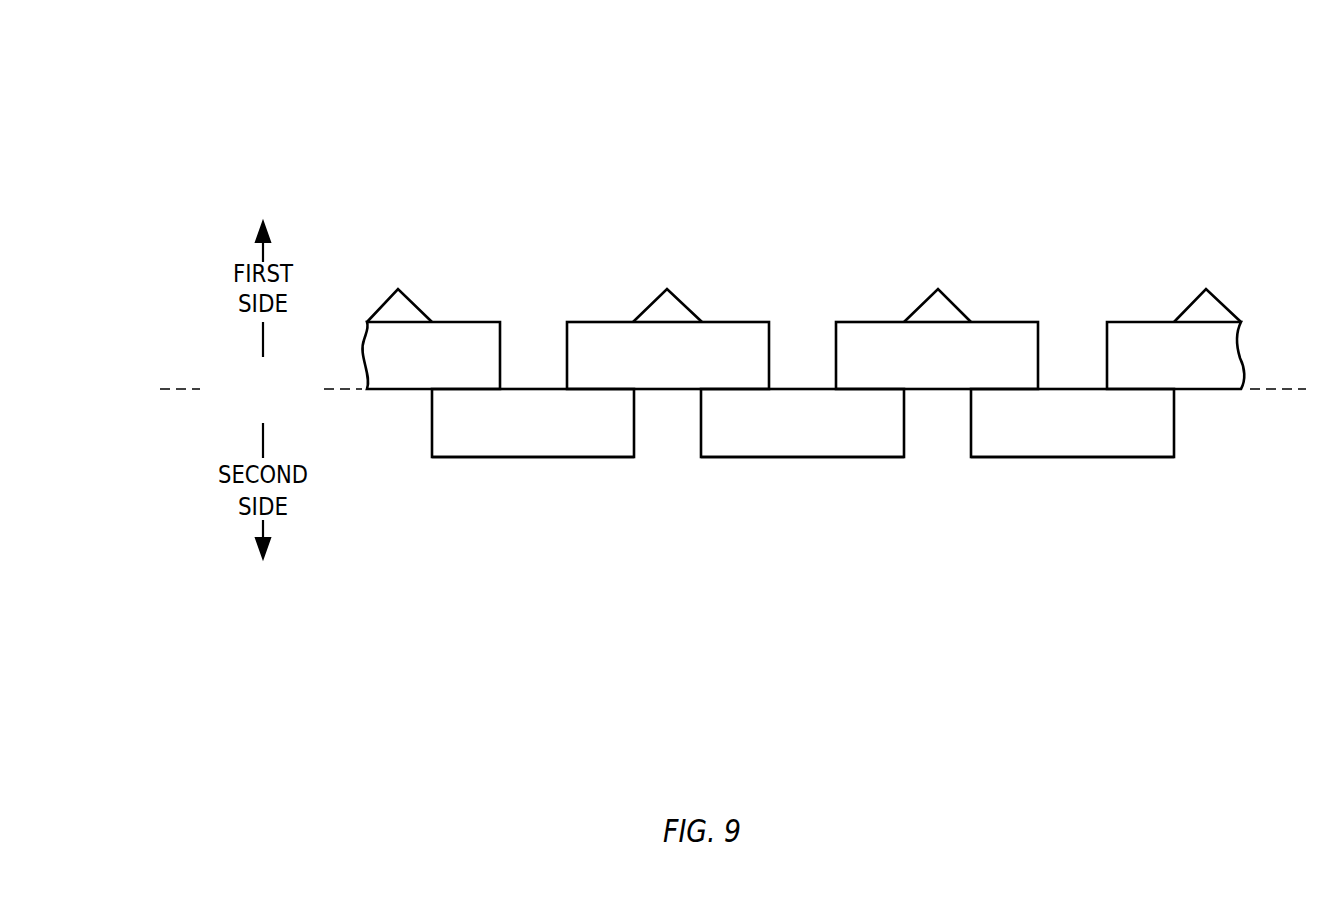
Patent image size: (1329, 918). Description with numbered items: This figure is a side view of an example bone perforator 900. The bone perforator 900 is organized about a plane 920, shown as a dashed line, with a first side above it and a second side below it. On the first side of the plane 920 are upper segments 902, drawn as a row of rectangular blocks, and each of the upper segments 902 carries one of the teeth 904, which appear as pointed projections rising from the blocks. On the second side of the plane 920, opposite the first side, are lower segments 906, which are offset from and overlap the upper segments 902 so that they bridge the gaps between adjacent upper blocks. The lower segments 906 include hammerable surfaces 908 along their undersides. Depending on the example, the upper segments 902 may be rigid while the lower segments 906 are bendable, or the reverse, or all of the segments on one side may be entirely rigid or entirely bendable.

The bone perforator 900 is at (302, 154).
The upper segments 902 is at (378, 367).
The teeth 904 is at (400, 285).
The lower segments 906 is at (514, 434).
The hammerable surfaces 908 is at (531, 460).
The plane 920 is at (733, 389).